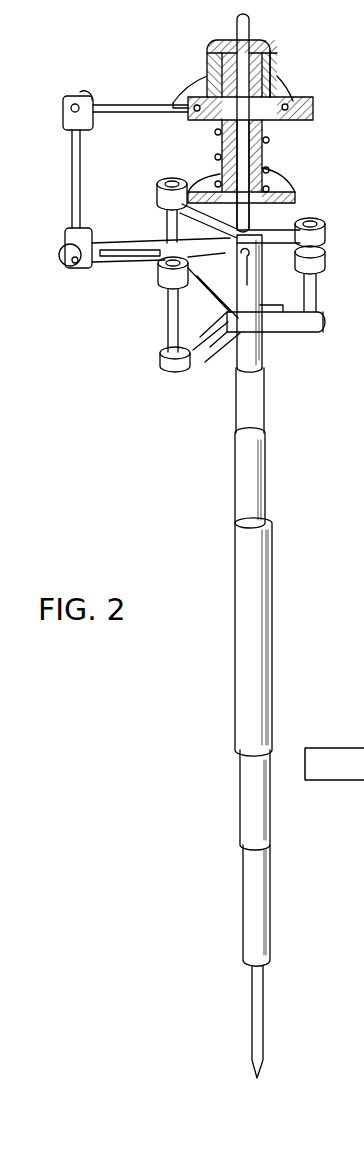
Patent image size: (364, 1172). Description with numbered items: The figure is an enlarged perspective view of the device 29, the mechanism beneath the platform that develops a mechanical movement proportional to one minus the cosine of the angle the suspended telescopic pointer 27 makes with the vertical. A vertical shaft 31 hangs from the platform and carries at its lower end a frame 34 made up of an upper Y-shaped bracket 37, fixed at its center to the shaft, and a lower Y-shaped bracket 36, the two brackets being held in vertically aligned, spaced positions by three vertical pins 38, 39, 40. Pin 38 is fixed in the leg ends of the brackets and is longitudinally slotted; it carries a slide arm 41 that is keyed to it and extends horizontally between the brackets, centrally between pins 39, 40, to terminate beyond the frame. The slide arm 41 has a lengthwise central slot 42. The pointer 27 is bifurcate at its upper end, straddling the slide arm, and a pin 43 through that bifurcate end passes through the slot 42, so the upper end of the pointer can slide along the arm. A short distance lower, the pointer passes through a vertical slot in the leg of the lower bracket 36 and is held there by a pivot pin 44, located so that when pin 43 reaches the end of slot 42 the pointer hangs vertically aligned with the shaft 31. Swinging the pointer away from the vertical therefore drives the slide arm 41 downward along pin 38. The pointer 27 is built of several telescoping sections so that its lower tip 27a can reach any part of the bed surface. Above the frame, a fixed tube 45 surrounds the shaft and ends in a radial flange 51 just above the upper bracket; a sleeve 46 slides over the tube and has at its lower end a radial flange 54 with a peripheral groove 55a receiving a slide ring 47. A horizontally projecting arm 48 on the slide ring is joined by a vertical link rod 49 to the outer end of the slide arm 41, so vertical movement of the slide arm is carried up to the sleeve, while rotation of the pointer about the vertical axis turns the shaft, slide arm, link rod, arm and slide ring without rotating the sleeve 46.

The telescopic pointer 27 is at (270, 602).
The lower tip 27a is at (267, 1075).
The device 29 is at (287, 152).
The vertical shaft 31 is at (251, 31).
The frame 34 is at (318, 336).
The lower Y-shaped bracket 36 is at (290, 329).
The upper Y-shaped bracket 37 is at (288, 222).
The vertical pin 38 is at (318, 282).
The vertical pin 39 is at (167, 220).
The vertical pin 40 is at (167, 297).
The slide arm 41 is at (93, 265).
The central slot 42 is at (119, 256).
The pin 43 is at (254, 281).
The pivot pin 44 is at (246, 327).
The tube 45 is at (263, 152).
The sleeve 46 is at (207, 61).
The slide ring 47 is at (312, 100).
The horizontally projecting arm 48 is at (135, 104).
The vertical link rod 49 is at (71, 176).
The radial flange 51 is at (283, 186).
The radial flange 54 is at (279, 84).
The peripheral groove 55a is at (294, 114).